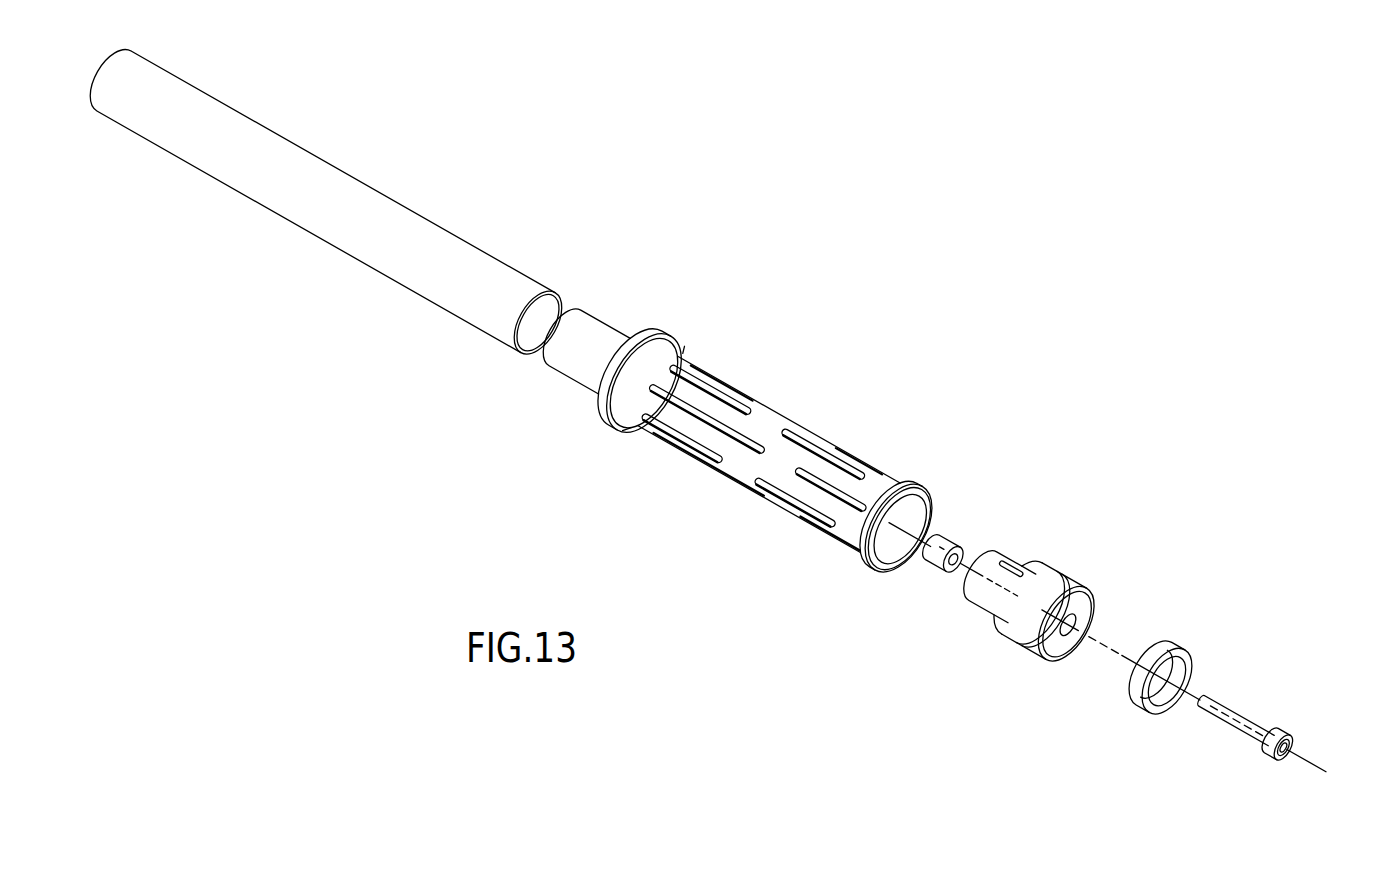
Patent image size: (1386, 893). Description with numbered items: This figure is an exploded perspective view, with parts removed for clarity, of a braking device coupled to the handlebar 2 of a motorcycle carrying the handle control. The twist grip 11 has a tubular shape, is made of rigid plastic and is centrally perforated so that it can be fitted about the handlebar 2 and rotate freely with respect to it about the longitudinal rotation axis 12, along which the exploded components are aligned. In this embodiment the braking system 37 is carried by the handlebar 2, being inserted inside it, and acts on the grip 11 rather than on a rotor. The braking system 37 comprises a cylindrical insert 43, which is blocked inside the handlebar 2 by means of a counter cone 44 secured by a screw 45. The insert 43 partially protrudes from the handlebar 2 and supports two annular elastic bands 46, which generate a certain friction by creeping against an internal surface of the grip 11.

The handlebar 2 is at (362, 198).
The twist grip 11 is at (767, 428).
The longitudinal rotation axis 12 is at (1307, 757).
The braking system 37 is at (1120, 514).
The cylindrical insert 43 is at (1023, 573).
The counter cone 44 is at (950, 543).
The screw 45 is at (1243, 720).
The annular elastic bands 46 is at (1150, 648).